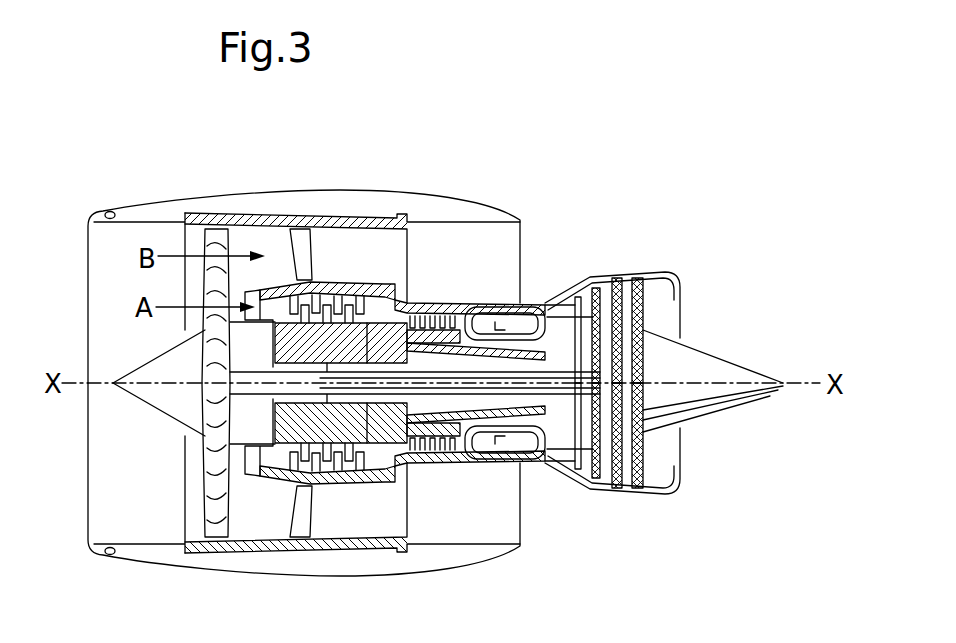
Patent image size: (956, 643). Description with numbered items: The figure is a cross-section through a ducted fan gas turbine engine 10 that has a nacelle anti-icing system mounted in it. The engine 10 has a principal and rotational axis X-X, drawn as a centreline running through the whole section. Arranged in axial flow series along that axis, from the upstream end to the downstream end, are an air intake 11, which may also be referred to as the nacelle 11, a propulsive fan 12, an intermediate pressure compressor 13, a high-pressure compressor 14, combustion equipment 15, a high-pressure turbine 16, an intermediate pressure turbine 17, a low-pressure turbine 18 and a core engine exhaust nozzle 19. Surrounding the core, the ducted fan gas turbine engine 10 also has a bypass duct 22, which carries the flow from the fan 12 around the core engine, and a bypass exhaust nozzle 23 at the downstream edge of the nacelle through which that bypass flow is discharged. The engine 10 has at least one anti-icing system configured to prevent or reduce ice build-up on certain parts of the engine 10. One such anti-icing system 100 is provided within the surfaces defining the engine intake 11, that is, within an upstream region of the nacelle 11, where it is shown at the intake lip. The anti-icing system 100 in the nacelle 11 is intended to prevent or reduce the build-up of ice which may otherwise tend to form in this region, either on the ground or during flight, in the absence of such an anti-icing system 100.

The ducted fan gas turbine engine 10 is at (148, 166).
The air intake 11 is at (100, 560).
The anti-icing system 100 is at (111, 560).
The propulsive fan 12 is at (203, 495).
The intermediate pressure compressor 13 is at (330, 460).
The high-pressure compressor 14 is at (437, 313).
The combustion equipment 15 is at (473, 457).
The high-pressure turbine 16 is at (537, 462).
The intermediate pressure turbine 17 is at (568, 305).
The low-pressure turbine 18 is at (590, 487).
The core engine exhaust nozzle 19 is at (676, 280).
The bypass duct 22 is at (494, 261).
The bypass exhaust nozzle 23 is at (521, 218).